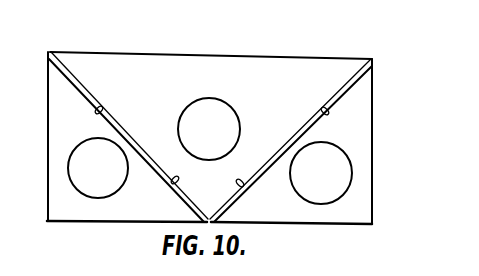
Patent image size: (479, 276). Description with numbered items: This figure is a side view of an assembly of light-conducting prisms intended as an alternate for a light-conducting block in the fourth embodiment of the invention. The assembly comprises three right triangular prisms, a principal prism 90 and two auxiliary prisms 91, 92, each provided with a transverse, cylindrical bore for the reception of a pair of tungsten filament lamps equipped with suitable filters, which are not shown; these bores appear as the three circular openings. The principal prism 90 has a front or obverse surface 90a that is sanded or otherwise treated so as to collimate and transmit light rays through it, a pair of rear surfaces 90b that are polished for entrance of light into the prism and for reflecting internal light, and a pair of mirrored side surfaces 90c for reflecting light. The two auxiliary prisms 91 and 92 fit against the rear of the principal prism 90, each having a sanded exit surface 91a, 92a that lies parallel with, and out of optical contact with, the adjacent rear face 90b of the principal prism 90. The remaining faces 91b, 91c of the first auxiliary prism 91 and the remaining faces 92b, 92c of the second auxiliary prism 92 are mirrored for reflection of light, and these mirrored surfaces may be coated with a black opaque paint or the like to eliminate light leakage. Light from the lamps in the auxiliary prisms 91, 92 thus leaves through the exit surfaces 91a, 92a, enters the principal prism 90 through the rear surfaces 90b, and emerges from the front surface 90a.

The principal prism 90 is at (210, 141).
The front or obverse surface 90a is at (250, 53).
The rear surfaces 90b is at (101, 109).
The mirrored side surfaces 90c is at (222, 86).
The auxiliary prism 91 is at (107, 158).
The sanded exit surface 91a is at (171, 183).
The mirrored face 91b is at (47, 133).
The mirrored face 91c is at (120, 224).
The auxiliary prism 92 is at (312, 164).
The sanded exit surface 92a is at (245, 185).
The mirrored face 92b is at (373, 139).
The mirrored face 92c is at (311, 228).